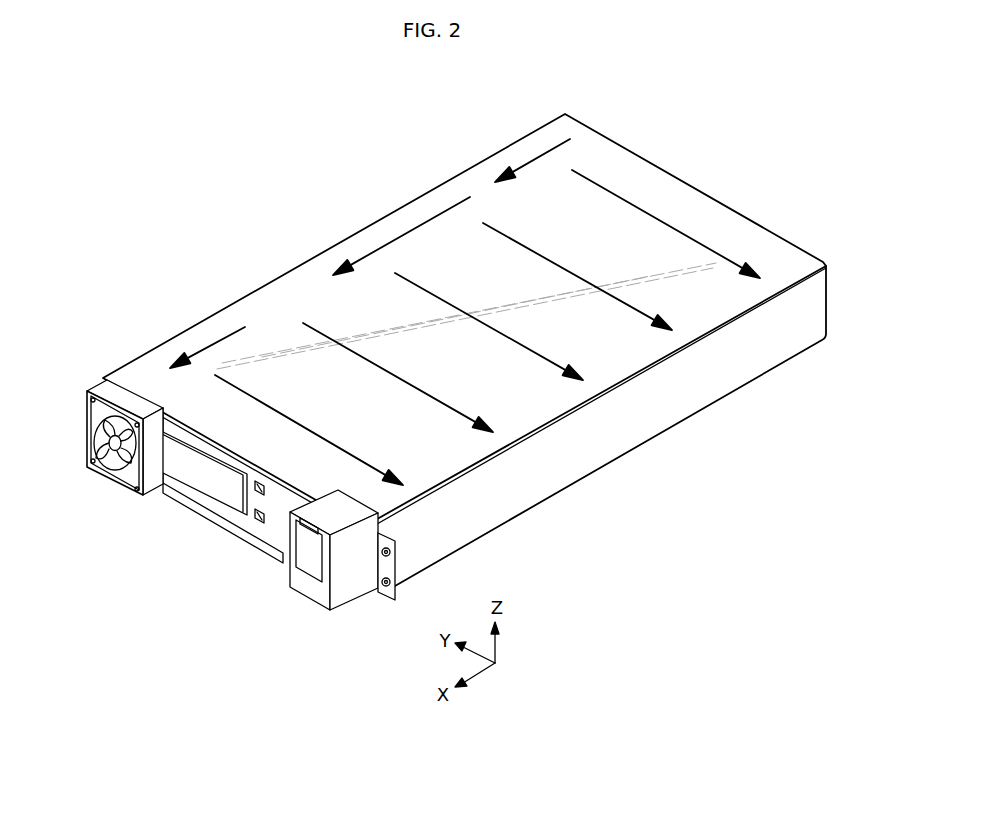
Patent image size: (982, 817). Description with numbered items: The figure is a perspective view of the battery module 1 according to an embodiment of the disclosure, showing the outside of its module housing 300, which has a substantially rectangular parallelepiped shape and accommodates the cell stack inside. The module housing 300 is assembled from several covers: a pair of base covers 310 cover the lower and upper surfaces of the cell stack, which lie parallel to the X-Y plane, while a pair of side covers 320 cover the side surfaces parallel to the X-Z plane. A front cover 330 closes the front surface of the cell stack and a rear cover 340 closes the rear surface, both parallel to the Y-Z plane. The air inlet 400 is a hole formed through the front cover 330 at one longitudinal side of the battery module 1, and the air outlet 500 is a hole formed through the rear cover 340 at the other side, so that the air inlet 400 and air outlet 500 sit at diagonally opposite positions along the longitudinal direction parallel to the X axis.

The battery module 1 is at (238, 148).
The module housing 300 is at (199, 323).
The base cover 310 is at (638, 350).
The side cover 320 is at (557, 475).
The front cover 330 is at (210, 478).
The rear cover 340 is at (675, 172).
The air inlet 400 is at (96, 432).
The air outlet 500 is at (822, 258).